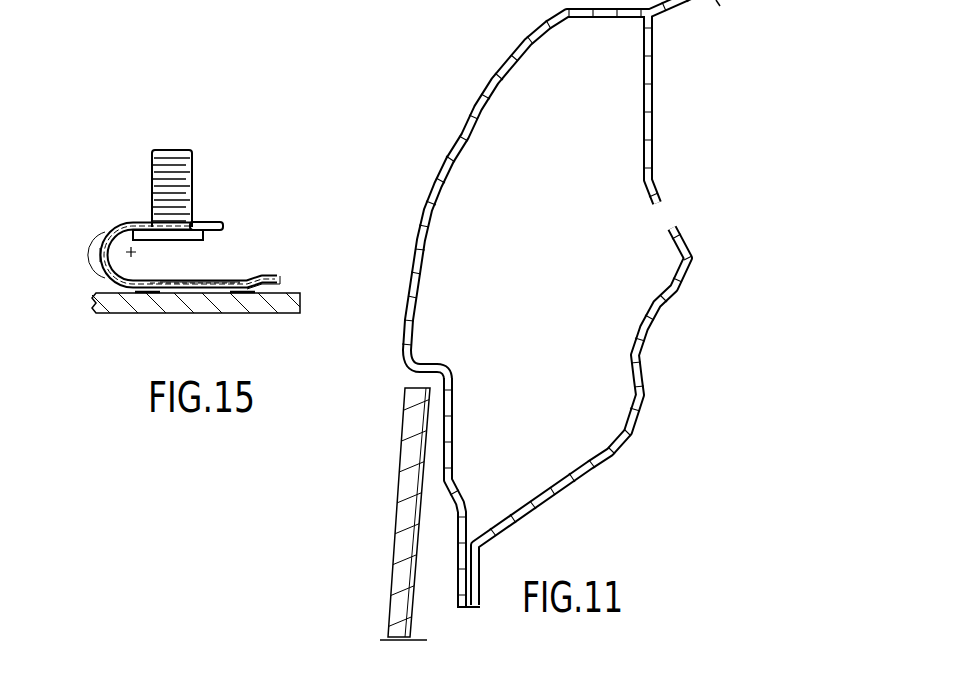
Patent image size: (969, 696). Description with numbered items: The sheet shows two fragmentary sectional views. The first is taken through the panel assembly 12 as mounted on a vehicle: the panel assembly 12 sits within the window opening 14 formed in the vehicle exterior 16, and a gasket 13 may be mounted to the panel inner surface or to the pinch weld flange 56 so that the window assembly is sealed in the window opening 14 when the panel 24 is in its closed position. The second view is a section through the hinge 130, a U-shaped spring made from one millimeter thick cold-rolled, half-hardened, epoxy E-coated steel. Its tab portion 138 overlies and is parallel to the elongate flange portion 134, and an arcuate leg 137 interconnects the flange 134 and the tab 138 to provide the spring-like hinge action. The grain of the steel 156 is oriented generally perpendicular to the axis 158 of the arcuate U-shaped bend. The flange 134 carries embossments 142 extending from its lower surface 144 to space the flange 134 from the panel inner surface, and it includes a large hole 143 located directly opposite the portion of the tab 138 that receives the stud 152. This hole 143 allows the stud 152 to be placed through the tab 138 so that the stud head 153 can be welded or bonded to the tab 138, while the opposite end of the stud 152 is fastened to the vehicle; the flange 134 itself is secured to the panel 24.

In FIG. 11, the panel assembly 12 is at (400, 457).
In FIG. 11, the gasket 13 is at (437, 410).
In FIG. 11, the window opening 14 is at (407, 373).
In FIG. 11, the vehicle exterior 16 is at (440, 157).
In FIG. 11, the pinch weld flange 56 is at (480, 567).
In FIG. 15, the panel 24 is at (202, 320).
In FIG. 15, the hinge 130 is at (240, 175).
In FIG. 15, the flange portion 134 is at (263, 283).
In FIG. 15, the leg 137 is at (103, 243).
In FIG. 15, the tab portion 138 is at (223, 225).
In FIG. 15, the embossments 142 is at (145, 305).
In FIG. 15, the large hole 143 is at (210, 277).
In FIG. 15, the lower surface 144 is at (180, 290).
In FIG. 15, the stud 152 is at (188, 180).
In FIG. 15, the stud head 153 is at (130, 222).
In FIG. 15, the grain of the steel 156 is at (100, 257).
In FIG. 15, the axis 158 is at (134, 254).